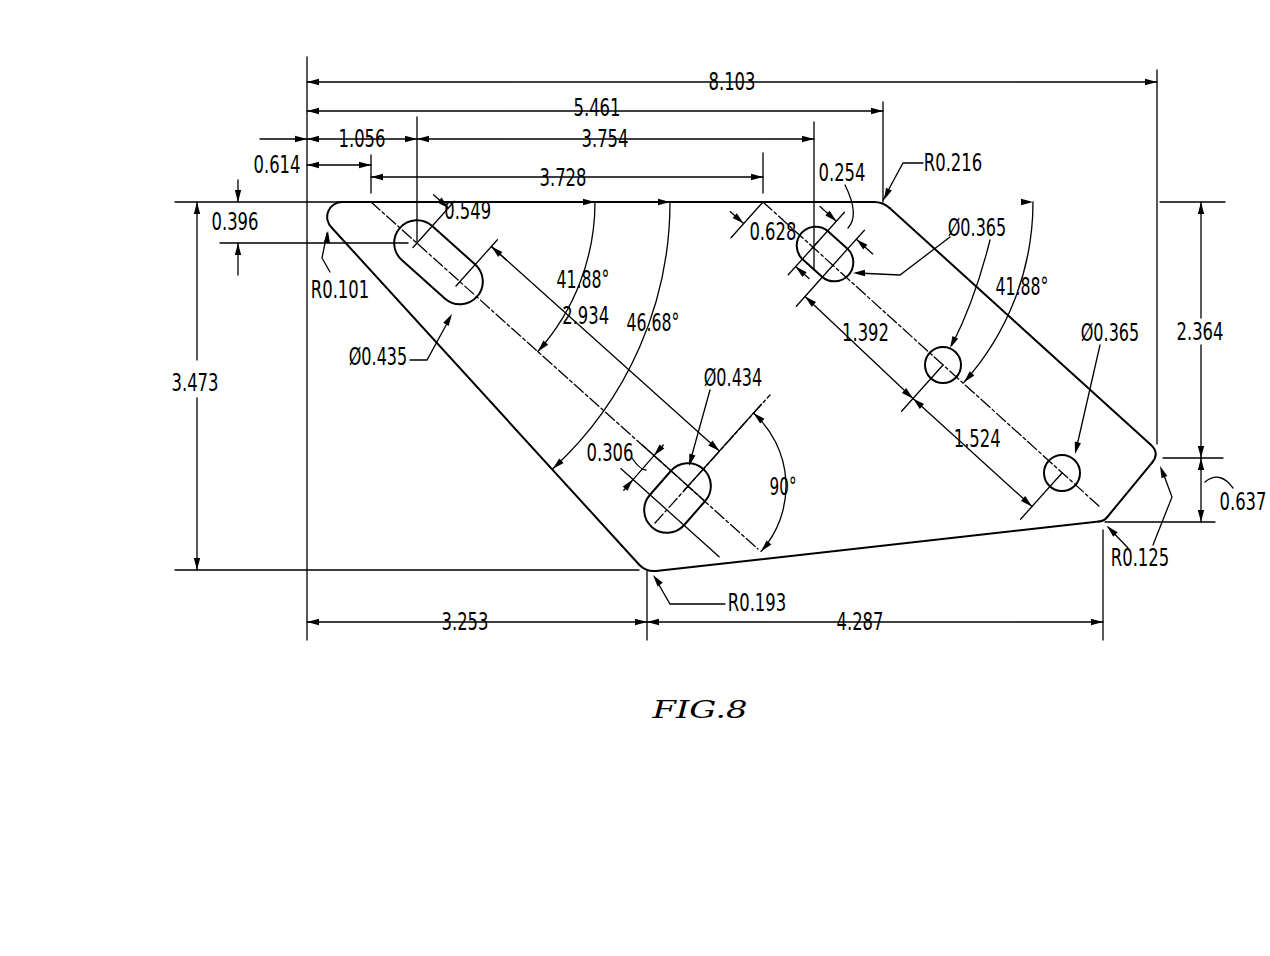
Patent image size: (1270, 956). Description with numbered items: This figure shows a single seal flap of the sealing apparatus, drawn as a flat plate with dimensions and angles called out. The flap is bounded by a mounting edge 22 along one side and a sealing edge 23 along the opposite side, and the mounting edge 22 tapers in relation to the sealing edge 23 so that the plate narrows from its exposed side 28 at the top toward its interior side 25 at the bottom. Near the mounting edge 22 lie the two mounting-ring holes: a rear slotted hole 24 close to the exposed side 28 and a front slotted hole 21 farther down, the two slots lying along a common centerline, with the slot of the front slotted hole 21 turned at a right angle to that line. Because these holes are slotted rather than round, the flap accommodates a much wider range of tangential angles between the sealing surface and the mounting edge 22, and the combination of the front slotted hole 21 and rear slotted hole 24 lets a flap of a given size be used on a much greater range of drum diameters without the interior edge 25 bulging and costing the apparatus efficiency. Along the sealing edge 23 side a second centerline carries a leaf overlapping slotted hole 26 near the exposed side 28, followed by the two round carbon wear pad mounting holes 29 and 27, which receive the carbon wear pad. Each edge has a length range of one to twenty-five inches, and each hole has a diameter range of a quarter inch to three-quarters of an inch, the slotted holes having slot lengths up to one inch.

The front slotted hole 21 is at (648, 527).
The mounting edge 22 is at (482, 397).
The sealing edge 23 is at (1068, 290).
The rear slotted hole 24 is at (420, 283).
The interior edge 25 is at (904, 526).
The leaf overlapping slotted hole 26 is at (837, 283).
The carbon wear pad mounting hole 27 is at (1070, 456).
The exposed side 28 is at (608, 175).
The carbon wear pad mounting hole 29 is at (938, 348).